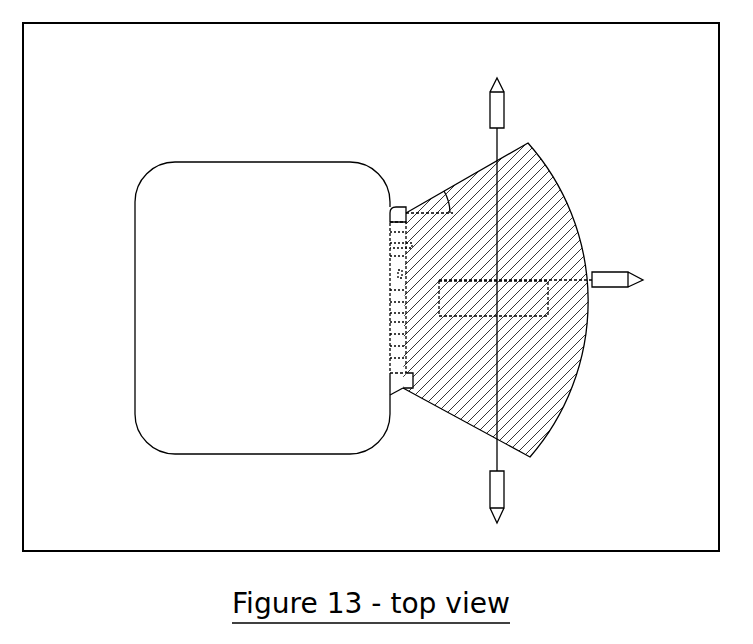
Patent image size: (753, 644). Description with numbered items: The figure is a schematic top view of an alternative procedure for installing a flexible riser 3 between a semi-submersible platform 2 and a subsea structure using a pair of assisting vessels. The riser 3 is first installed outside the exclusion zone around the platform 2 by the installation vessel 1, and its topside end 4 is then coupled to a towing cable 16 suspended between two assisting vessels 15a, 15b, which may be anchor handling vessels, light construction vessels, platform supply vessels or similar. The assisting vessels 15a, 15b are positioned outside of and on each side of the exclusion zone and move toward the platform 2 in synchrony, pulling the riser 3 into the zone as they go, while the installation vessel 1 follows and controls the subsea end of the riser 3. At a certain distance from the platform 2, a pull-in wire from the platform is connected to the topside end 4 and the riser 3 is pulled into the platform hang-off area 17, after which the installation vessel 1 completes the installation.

The installation vessel 1 is at (611, 272).
The platform 2 is at (322, 162).
The flexible riser 3 is at (533, 281).
The topside end 4 is at (497, 281).
The assisting vessel 15a is at (504, 104).
The assisting vessel 15b is at (497, 488).
The towing cable 16 is at (497, 148).
The platform hang-off area 17 is at (408, 352).